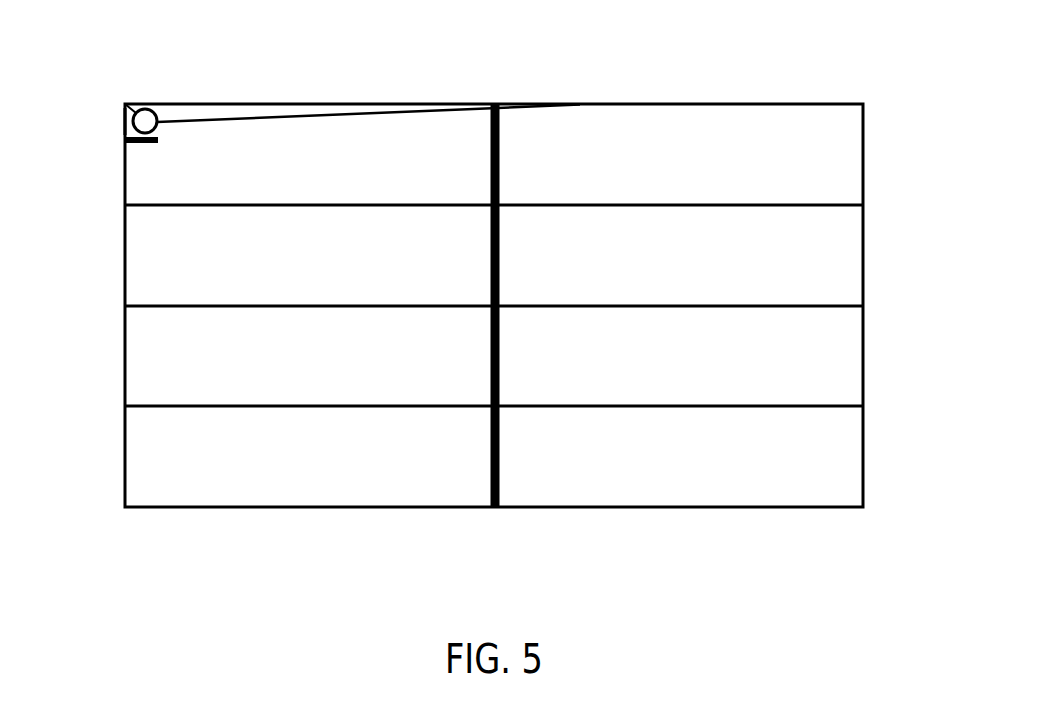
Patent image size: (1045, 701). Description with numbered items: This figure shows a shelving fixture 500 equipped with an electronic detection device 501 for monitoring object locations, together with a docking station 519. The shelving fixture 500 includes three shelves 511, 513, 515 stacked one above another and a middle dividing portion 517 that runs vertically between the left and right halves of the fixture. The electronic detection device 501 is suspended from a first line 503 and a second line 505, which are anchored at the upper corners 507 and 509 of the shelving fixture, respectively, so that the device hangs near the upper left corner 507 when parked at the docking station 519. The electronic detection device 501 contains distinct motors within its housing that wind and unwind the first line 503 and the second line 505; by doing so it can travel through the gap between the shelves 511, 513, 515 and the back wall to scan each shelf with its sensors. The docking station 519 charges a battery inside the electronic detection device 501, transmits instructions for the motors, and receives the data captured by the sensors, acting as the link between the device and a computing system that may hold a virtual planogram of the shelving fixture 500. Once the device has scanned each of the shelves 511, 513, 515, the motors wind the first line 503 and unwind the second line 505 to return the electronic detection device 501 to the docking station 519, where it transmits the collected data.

The shelving fixture 500 is at (909, 311).
The electronic detection device 501 is at (156, 99).
The first line 503 is at (116, 115).
The second line 505 is at (270, 113).
The upper corner 507 is at (116, 96).
The upper corner 509 is at (869, 96).
The shelf 511 is at (116, 199).
The shelf 513 is at (117, 300).
The shelf 515 is at (117, 400).
The middle dividing portion 517 is at (509, 254).
The docking station 519 is at (163, 148).